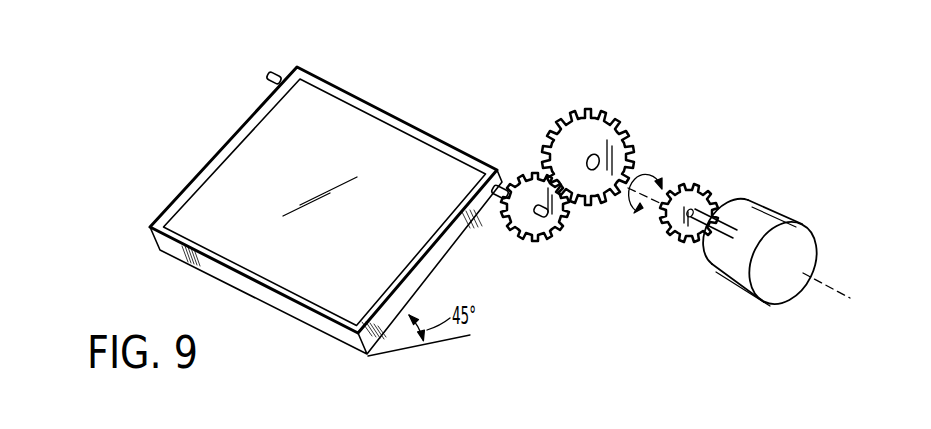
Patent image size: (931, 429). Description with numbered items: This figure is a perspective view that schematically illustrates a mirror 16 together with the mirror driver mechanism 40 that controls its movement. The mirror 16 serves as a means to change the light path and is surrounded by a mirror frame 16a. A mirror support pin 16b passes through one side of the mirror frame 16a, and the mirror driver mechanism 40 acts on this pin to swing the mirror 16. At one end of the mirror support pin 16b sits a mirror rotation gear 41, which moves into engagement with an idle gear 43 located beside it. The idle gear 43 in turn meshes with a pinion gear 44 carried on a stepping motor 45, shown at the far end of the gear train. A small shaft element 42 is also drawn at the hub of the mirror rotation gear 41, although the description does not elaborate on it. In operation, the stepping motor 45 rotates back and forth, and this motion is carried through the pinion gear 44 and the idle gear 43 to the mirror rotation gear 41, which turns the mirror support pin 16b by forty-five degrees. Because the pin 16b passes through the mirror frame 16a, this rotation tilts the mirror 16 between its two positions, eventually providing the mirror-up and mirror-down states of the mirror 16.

The mirror 16 is at (196, 212).
The mirror frame 16a is at (230, 140).
The mirror support pin 16b is at (270, 75).
The mirror driver mechanism 40 is at (684, 152).
The mirror rotation gear 41 is at (525, 188).
The gear shaft 42 is at (535, 222).
The idle gear 43 is at (602, 130).
The pinion gear 44 is at (705, 208).
The stepping motor 45 is at (733, 265).